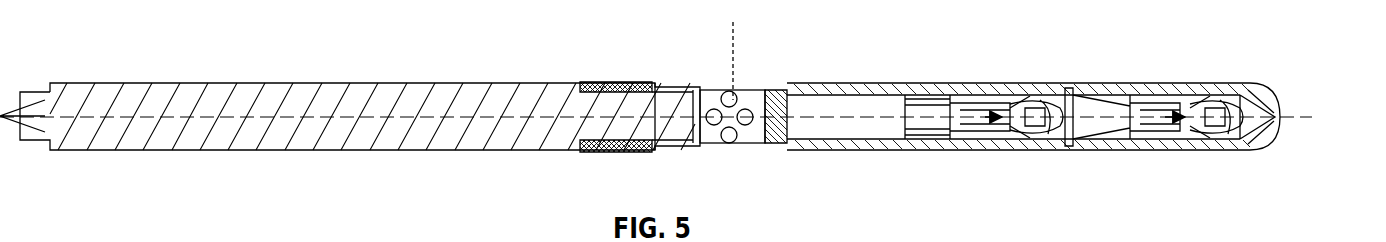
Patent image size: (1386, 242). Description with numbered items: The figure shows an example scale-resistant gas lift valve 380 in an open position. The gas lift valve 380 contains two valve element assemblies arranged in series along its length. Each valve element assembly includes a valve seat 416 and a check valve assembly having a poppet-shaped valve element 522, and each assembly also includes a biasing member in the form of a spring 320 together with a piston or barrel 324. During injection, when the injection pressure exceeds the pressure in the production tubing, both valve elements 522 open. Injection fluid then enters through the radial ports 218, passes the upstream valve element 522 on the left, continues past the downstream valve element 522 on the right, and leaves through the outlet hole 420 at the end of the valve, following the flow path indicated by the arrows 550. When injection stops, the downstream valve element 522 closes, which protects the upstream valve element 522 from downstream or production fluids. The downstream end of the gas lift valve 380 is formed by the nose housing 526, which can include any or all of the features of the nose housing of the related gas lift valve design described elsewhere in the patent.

The gas lift valve 380 is at (268, 23).
The arrows 550 is at (714, 46).
The radial ports 218 is at (748, 128).
The spring 320 is at (960, 92).
The piston or barrel 324 is at (1135, 90).
The valve seat 416 is at (1000, 92).
The valve element 522 is at (1050, 132).
The nose housing 526 is at (1250, 90).
The outlet hole 420 is at (1288, 131).